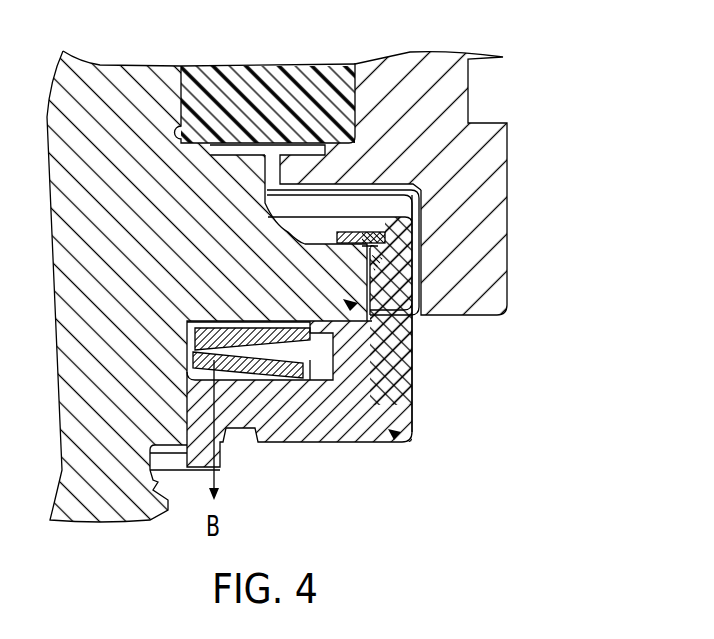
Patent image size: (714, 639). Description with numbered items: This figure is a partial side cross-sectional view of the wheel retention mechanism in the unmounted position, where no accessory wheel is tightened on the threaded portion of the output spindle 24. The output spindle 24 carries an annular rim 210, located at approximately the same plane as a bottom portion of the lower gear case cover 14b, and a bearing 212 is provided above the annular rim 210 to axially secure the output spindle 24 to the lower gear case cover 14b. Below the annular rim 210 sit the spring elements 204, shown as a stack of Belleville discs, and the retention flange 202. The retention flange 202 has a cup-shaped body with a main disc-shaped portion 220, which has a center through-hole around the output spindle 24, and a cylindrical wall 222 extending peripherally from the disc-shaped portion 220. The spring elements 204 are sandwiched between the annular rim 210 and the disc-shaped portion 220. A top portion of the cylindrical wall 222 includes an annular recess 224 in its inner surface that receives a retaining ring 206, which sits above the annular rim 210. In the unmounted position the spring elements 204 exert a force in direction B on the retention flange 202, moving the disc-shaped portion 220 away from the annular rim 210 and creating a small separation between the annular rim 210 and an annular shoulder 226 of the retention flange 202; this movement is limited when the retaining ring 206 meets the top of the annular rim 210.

The output spindle 24 is at (120, 72).
The bearing 212 is at (272, 74).
The lower gear case cover 14b is at (460, 108).
The retaining ring 206 is at (421, 193).
The cylindrical wall 222 is at (410, 290).
The annular recess 224 is at (402, 293).
The annular rim 210 is at (350, 307).
The annular shoulder 226 is at (375, 255).
The disc-shaped portion 220 is at (338, 425).
The retention flange 202 is at (395, 436).
The spring elements 204 is at (303, 342).